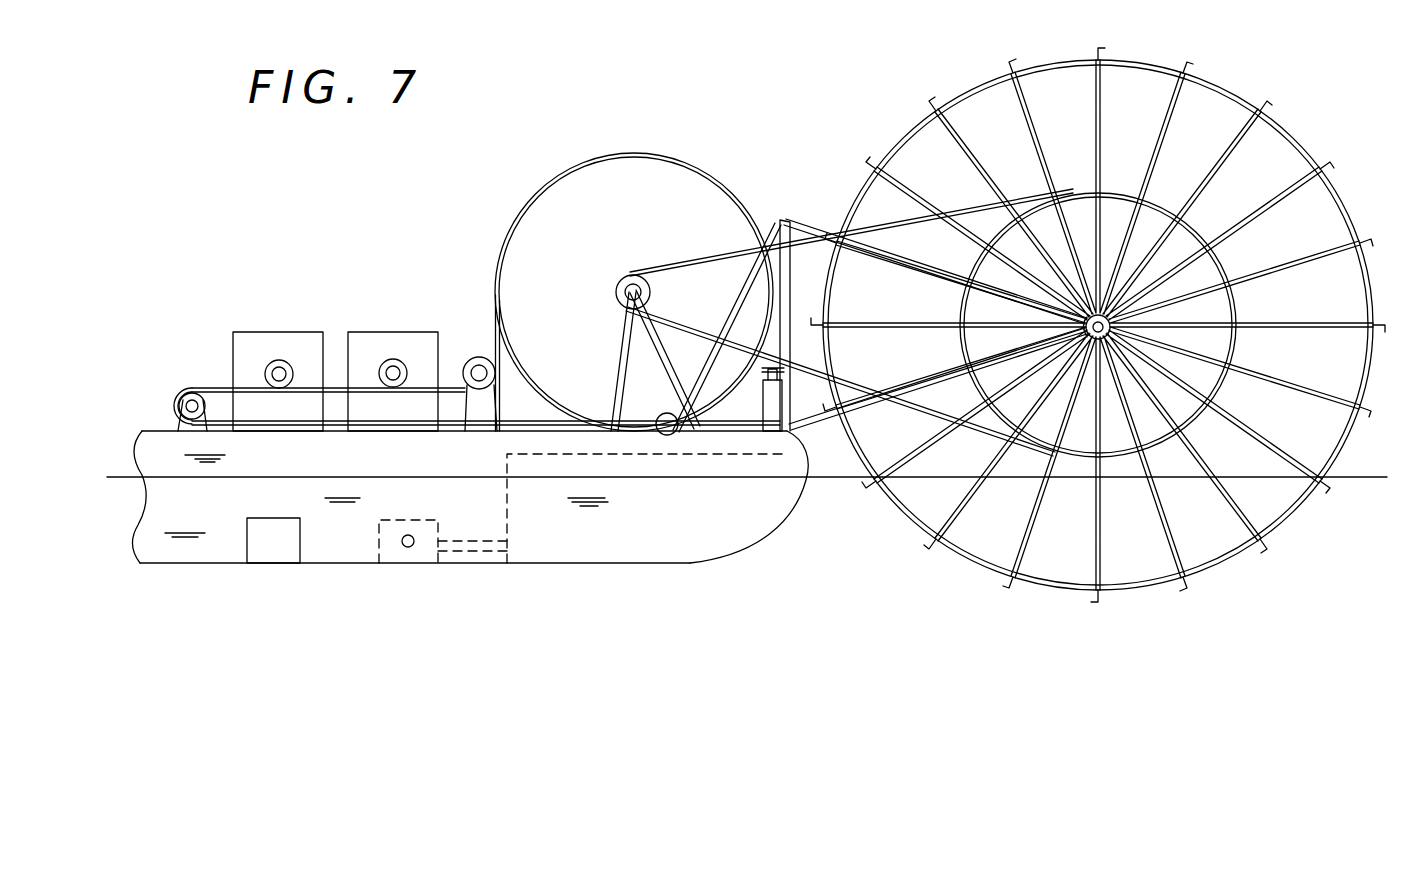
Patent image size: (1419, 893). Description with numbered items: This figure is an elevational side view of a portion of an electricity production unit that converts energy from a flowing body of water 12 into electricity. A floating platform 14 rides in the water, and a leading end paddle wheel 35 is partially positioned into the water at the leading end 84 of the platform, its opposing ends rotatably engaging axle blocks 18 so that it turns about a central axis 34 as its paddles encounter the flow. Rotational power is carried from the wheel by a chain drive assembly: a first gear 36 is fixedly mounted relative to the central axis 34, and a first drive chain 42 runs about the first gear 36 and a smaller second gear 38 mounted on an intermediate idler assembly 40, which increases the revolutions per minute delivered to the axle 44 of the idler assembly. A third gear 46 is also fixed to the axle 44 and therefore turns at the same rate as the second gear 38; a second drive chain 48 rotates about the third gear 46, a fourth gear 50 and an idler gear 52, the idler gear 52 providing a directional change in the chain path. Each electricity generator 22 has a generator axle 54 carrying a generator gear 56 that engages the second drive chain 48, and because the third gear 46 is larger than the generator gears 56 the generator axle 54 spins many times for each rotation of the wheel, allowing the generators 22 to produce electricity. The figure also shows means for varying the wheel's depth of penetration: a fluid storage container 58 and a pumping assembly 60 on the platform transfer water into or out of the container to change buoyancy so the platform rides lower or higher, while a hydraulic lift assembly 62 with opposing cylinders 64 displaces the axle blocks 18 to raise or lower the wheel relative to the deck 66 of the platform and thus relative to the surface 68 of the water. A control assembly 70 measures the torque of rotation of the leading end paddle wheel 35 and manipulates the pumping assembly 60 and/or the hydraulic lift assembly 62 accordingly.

The flowing body of water 12 is at (1318, 527).
The floating platform 14 is at (630, 565).
The axle blocks 18 is at (985, 553).
The electricity generators 22 is at (232, 352).
The central axis 34 is at (1090, 275).
The leading end paddle wheel 35 is at (1222, 90).
The first gear 36 is at (1182, 240).
The second gear 38 is at (740, 212).
The intermediate idler assembly 40 is at (740, 212).
The first drive chain 42 is at (958, 210).
The axle 44 is at (636, 284).
The third gear 46 is at (607, 170).
The second drive chain 48 is at (492, 318).
The fourth gear 50 is at (212, 395).
The idler gear 52 is at (466, 360).
The generator axle 54 is at (277, 368).
The generator gear 56 is at (272, 368).
The fluid storage container 58 is at (546, 540).
The pumping assembly 60 is at (398, 556).
The hydraulic lift assembly 62 is at (790, 420).
The cylinders 64 is at (766, 408).
The deck 66 is at (162, 431).
The surface 68 is at (1355, 478).
The control assembly 70 is at (262, 548).
The leading end 84 is at (758, 535).